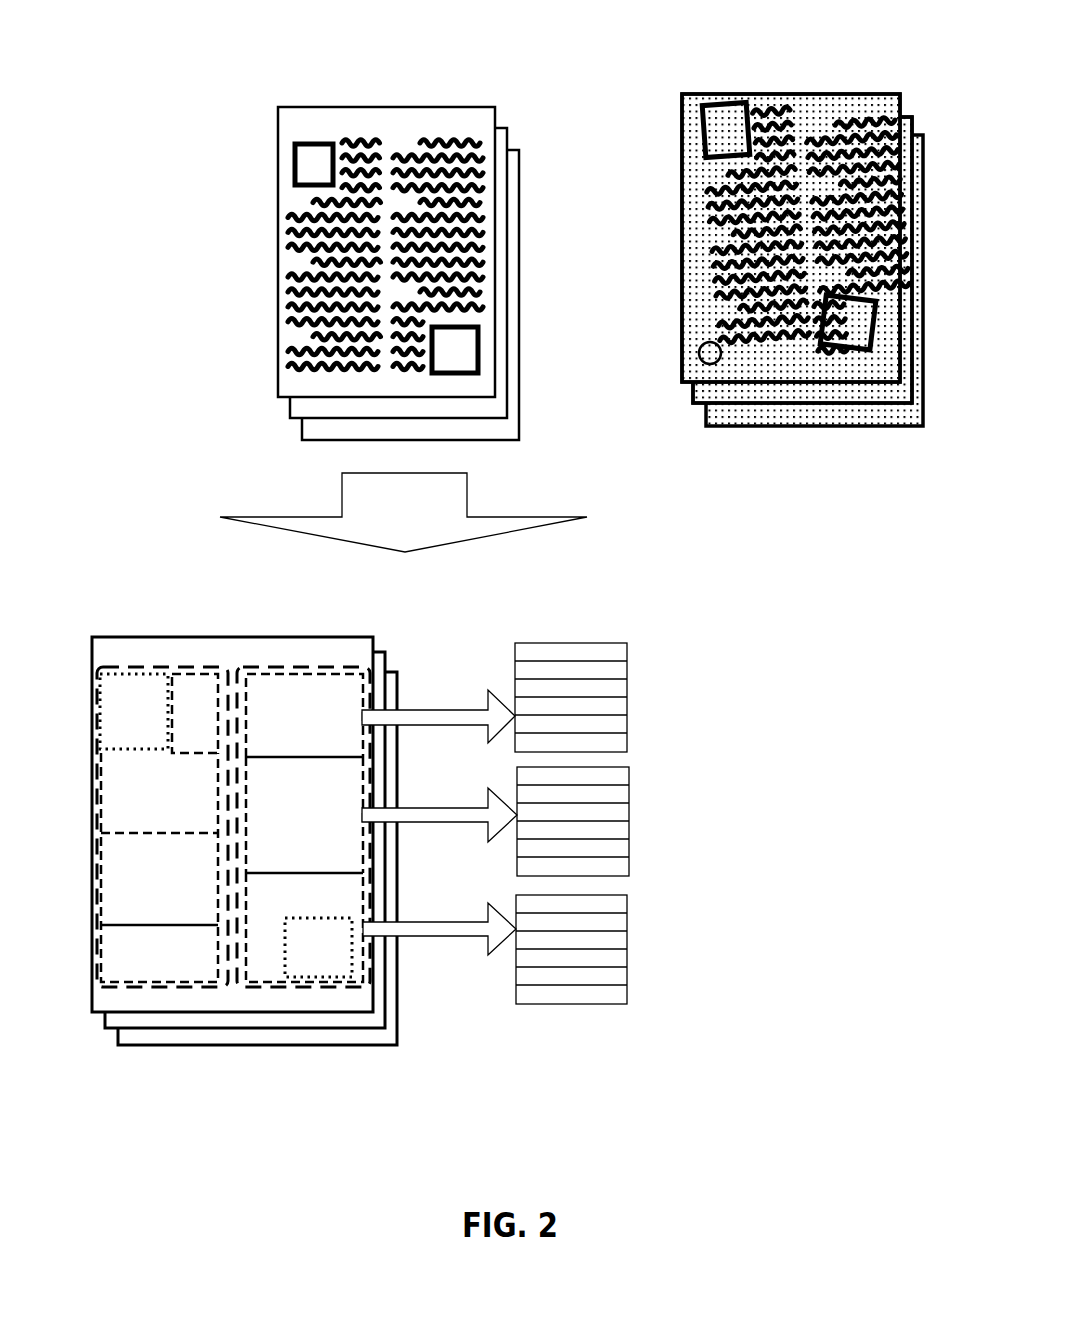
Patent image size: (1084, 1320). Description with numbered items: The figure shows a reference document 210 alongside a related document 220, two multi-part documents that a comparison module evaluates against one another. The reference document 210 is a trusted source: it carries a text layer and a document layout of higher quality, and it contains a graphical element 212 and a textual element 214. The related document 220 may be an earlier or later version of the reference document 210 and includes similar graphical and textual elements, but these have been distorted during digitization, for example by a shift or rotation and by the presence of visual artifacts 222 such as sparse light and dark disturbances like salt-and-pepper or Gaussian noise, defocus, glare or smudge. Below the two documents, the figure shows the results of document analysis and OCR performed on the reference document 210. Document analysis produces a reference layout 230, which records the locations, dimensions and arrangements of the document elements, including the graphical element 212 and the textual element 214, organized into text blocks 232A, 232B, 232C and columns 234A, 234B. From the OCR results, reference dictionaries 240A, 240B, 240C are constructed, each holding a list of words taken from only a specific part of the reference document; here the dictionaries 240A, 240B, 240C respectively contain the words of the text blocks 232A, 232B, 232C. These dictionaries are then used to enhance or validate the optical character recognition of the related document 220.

The reference document 210 is at (314, 240).
The graphical element 212 is at (293, 163).
The textual element 214 is at (288, 288).
The related document 220 is at (755, 225).
The visual artifacts 222 is at (698, 353).
The reference layout 230 is at (297, 849).
The text block 232A is at (362, 677).
The text block 232B is at (362, 797).
The text block 232C is at (363, 907).
The column 234A is at (152, 990).
The column 234B is at (297, 990).
The reference dictionary 240A is at (571, 697).
The reference dictionary 240B is at (573, 821).
The reference dictionary 240C is at (571, 949).